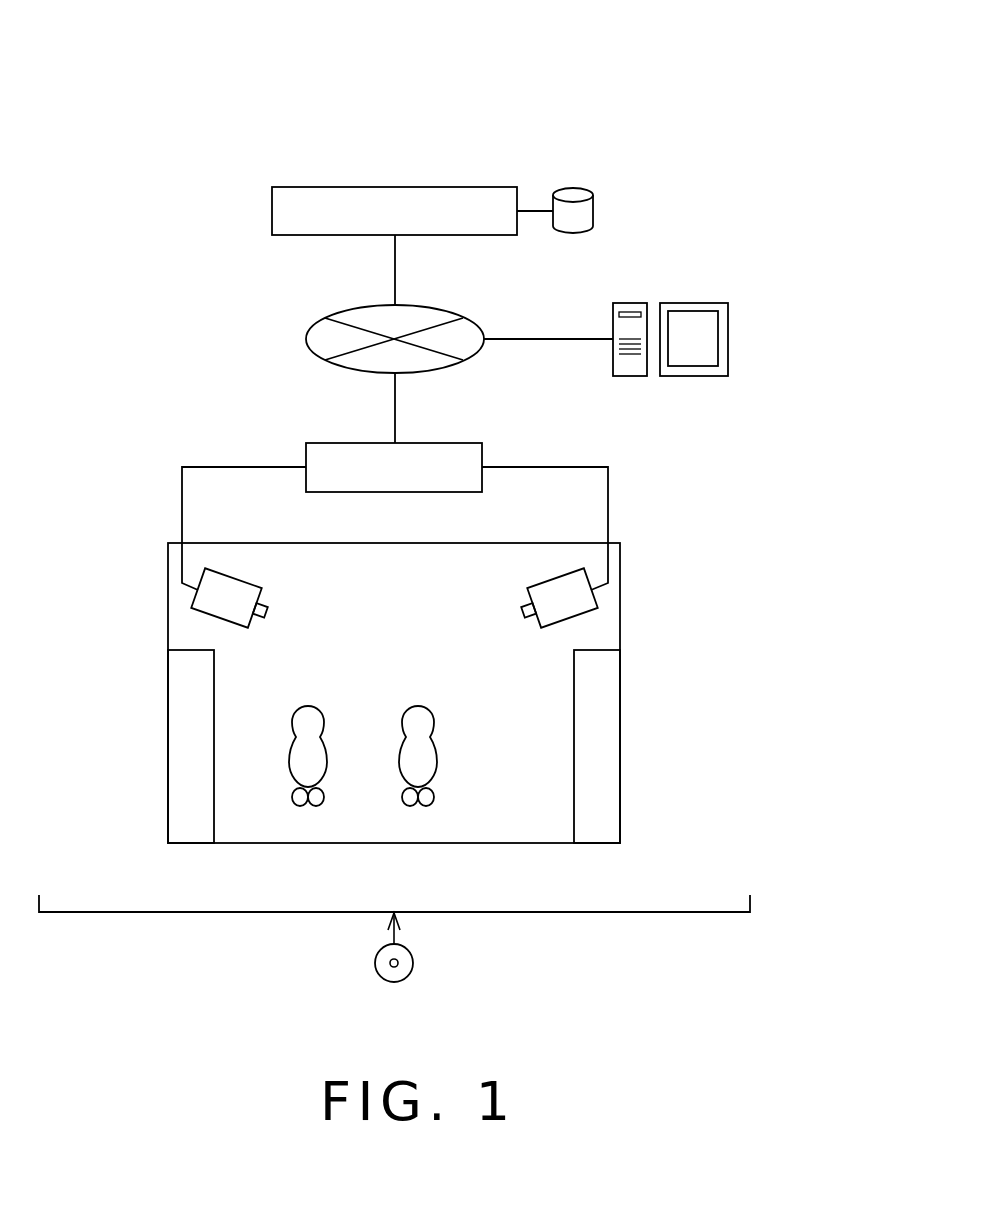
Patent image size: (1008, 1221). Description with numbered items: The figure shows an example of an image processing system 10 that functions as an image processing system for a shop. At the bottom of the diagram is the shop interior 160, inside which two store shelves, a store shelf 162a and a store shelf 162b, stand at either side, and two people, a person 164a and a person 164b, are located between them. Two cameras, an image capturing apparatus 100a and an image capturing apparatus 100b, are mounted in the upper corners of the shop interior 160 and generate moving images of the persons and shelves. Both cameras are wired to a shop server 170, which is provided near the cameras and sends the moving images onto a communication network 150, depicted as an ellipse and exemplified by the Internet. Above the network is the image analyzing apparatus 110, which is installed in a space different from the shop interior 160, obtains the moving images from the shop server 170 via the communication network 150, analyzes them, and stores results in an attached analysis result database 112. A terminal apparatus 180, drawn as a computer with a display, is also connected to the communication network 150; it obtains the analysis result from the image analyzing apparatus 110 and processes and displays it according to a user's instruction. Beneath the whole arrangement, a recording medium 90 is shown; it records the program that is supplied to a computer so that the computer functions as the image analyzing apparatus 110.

The image processing system 10 is at (643, 35).
The image analyzing apparatus 110 is at (306, 186).
The analysis result database 112 is at (594, 208).
The communication network 150 is at (306, 339).
The terminal apparatus 180 is at (728, 296).
The shop server 170 is at (483, 446).
The shop interior 160 is at (622, 591).
The image capturing apparatus 100a is at (262, 584).
The image capturing apparatus 100b is at (527, 582).
The store shelf 162a is at (178, 750).
The store shelf 162b is at (610, 750).
The person 164a is at (322, 694).
The person 164b is at (432, 694).
The recording medium 90 is at (413, 966).